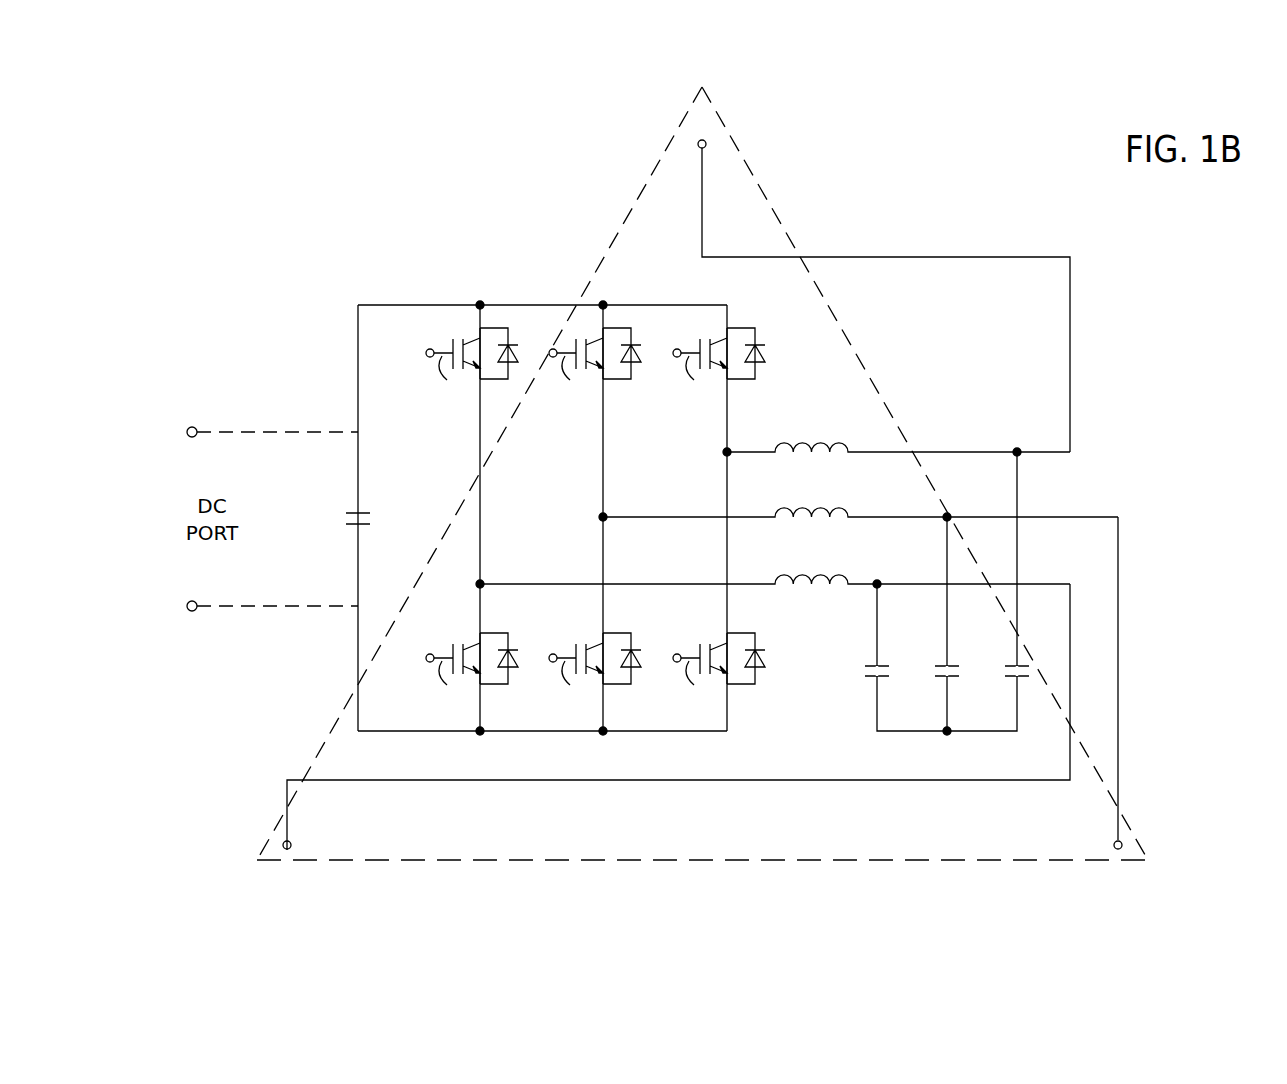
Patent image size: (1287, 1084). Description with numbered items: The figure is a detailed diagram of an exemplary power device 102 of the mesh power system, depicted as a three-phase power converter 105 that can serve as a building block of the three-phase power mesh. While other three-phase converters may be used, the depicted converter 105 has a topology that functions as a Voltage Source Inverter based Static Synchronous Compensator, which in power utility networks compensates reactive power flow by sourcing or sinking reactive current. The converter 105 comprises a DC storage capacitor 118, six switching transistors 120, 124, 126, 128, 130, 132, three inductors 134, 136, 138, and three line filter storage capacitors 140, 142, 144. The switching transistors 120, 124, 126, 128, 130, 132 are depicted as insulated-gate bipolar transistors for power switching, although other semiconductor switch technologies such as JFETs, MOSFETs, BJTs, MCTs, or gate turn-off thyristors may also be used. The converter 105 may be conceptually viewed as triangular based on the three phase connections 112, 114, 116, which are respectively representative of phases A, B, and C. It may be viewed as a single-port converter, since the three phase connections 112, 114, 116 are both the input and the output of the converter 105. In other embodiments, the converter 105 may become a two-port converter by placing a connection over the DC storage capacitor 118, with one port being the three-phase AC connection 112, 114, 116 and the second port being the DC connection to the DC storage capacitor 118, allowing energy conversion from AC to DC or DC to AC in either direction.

The power device 102 is at (356, 170).
The three-phase power converter 105 is at (658, 250).
The phase connection 112 is at (706, 143).
The phase connection 114 is at (1122, 845).
The phase connection 116 is at (283, 845).
The DC storage capacitor 118 is at (370, 517).
The switching transistor 120 is at (472, 370).
The switching transistor 124 is at (595, 370).
The switching transistor 126 is at (719, 370).
The switching transistor 128 is at (472, 675).
The switching transistor 130 is at (595, 675).
The switching transistor 132 is at (719, 675).
The inductor 134 is at (755, 450).
The inductor 136 is at (755, 515).
The inductor 138 is at (755, 581).
The line filter storage capacitor 140 is at (876, 703).
The line filter storage capacitor 142 is at (946, 703).
The line filter storage capacitor 144 is at (1016, 703).